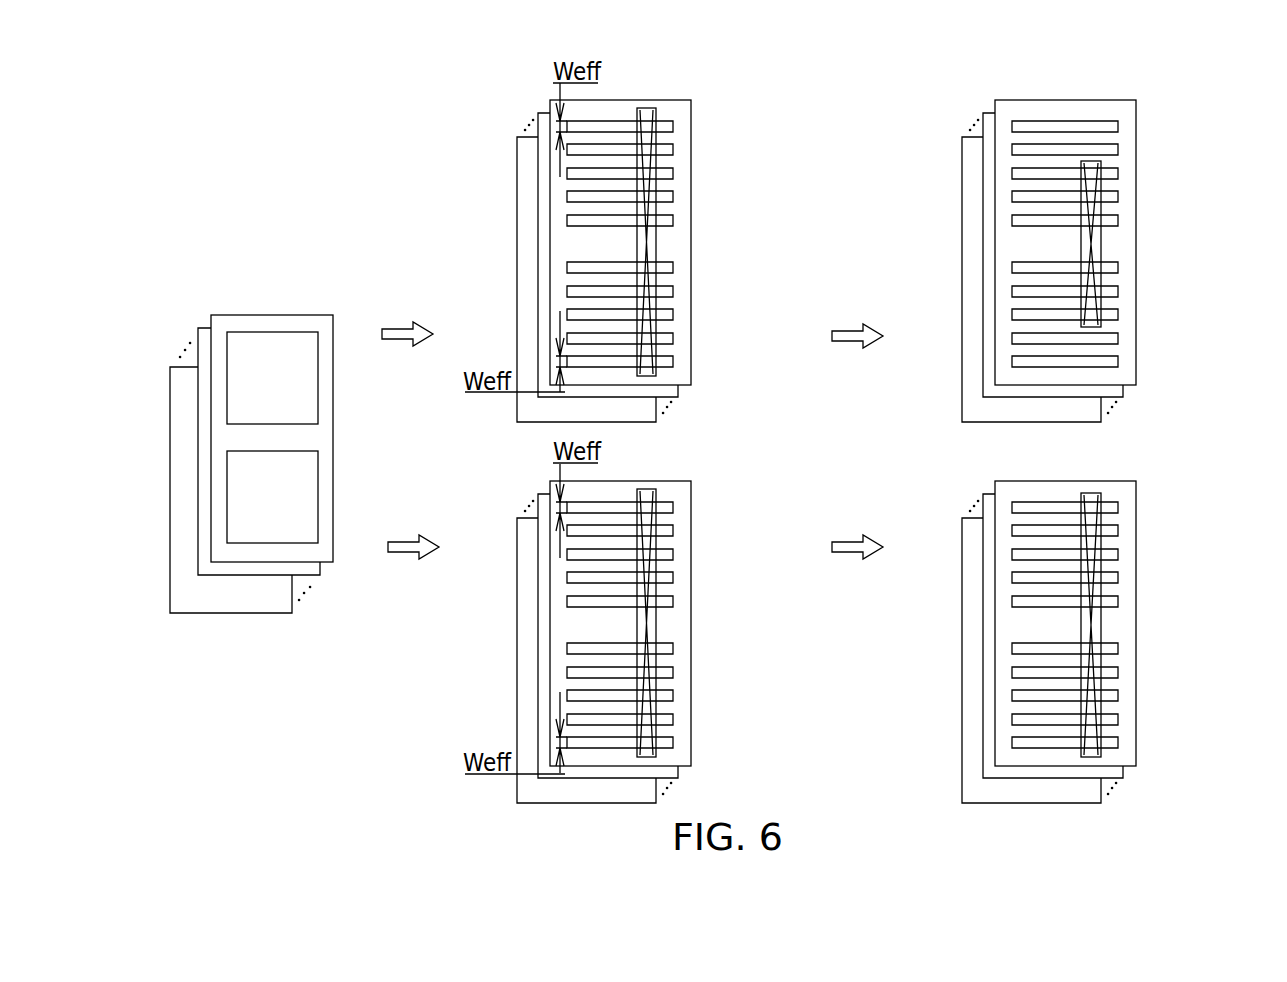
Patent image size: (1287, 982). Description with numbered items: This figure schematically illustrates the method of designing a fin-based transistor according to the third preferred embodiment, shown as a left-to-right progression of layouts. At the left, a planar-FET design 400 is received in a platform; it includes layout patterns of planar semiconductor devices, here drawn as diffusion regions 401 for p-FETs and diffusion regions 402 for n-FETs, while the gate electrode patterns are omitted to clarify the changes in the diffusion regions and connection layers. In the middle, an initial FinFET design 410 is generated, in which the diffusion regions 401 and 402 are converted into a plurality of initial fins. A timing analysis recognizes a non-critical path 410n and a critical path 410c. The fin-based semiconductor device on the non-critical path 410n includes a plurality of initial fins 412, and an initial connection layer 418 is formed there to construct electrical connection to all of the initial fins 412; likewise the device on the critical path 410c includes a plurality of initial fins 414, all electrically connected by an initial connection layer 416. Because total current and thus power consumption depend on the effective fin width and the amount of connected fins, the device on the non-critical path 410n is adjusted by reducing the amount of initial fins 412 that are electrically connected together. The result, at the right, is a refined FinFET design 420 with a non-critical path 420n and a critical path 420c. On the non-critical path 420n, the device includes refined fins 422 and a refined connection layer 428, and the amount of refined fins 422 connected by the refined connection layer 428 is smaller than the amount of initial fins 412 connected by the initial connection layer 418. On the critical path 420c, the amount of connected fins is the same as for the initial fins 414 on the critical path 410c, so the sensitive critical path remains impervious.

The planar-FET design 400 is at (266, 410).
The diffusion regions for p-FETs 401 is at (291, 393).
The diffusion regions for n-FETs 402 is at (291, 513).
The initial FinFET design 410 is at (486, 109).
The non-critical path 410n is at (672, 94).
The critical path 410c is at (672, 476).
The initial fins 412 is at (653, 244).
The initial fins 414 is at (875, 625).
The initial connection layer 416 is at (656, 628).
The initial connection layer 418 is at (656, 247).
The refined FinFET design 420 is at (929, 109).
The non-critical path 420n is at (1115, 94).
The critical path 420c is at (1115, 476).
The refined fins 422 is at (1097, 244).
The refined connection layer 428 is at (1101, 247).